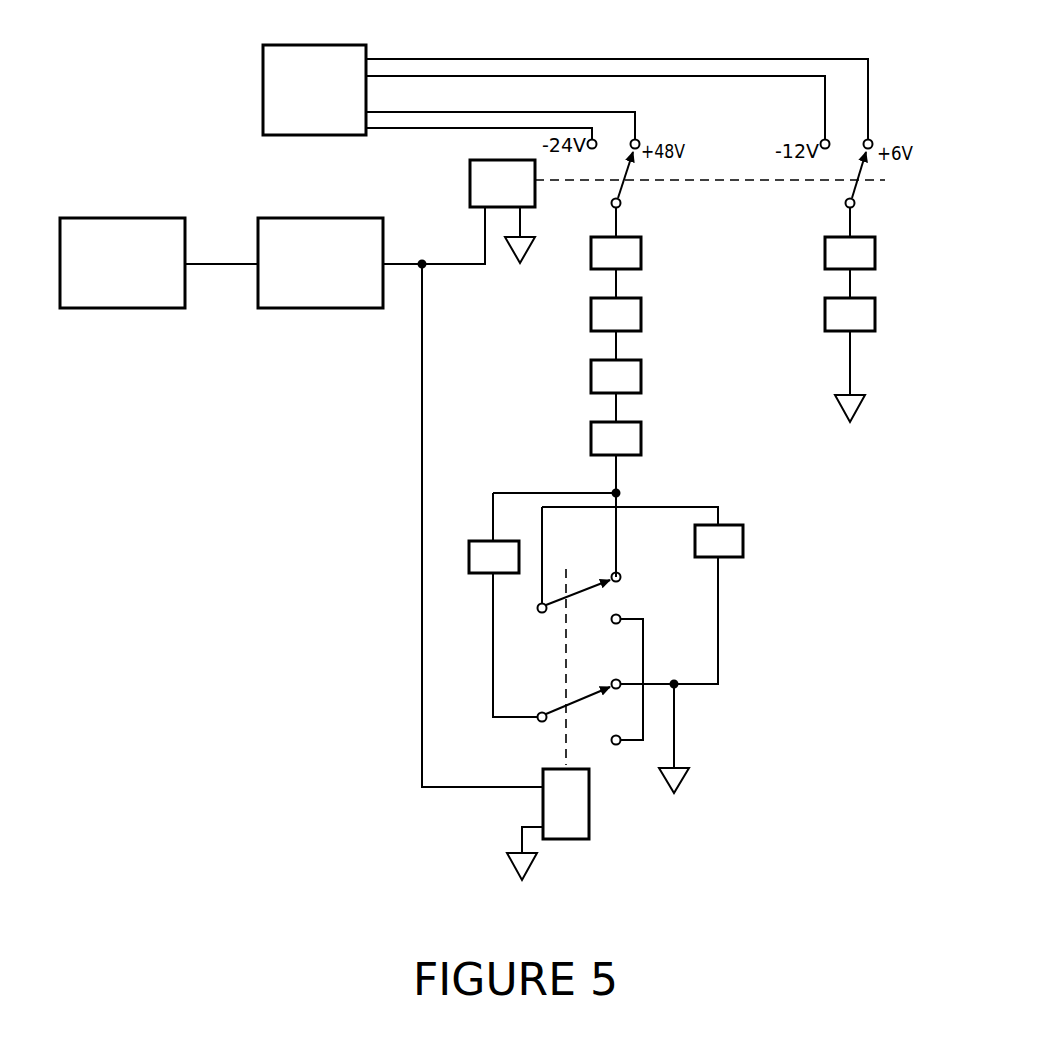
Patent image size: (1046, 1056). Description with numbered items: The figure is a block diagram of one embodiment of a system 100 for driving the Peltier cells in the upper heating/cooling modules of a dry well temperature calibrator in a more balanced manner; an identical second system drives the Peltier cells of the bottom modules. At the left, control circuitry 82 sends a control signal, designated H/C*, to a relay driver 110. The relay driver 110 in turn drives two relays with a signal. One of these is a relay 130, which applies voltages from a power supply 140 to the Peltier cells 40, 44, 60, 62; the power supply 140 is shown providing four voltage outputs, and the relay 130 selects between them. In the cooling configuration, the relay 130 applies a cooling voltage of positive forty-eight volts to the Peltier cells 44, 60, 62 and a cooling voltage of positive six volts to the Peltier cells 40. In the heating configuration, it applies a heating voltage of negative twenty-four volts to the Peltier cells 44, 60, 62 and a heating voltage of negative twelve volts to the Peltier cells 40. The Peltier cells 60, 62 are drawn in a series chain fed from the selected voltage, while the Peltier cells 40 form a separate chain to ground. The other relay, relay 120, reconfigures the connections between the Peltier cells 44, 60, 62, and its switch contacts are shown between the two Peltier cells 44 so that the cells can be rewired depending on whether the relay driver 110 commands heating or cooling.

The system 100 is at (262, 407).
The power supply 140 is at (336, 44).
The relay 130 is at (470, 180).
The control circuitry 82 is at (143, 218).
The relay driver 110 is at (343, 218).
The Peltier cell 60 is at (641, 253).
The Peltier cell 62 is at (641, 376).
The Peltier cell 40 is at (875, 253).
The Peltier cell 44 is at (480, 541).
The relay 120 is at (589, 805).